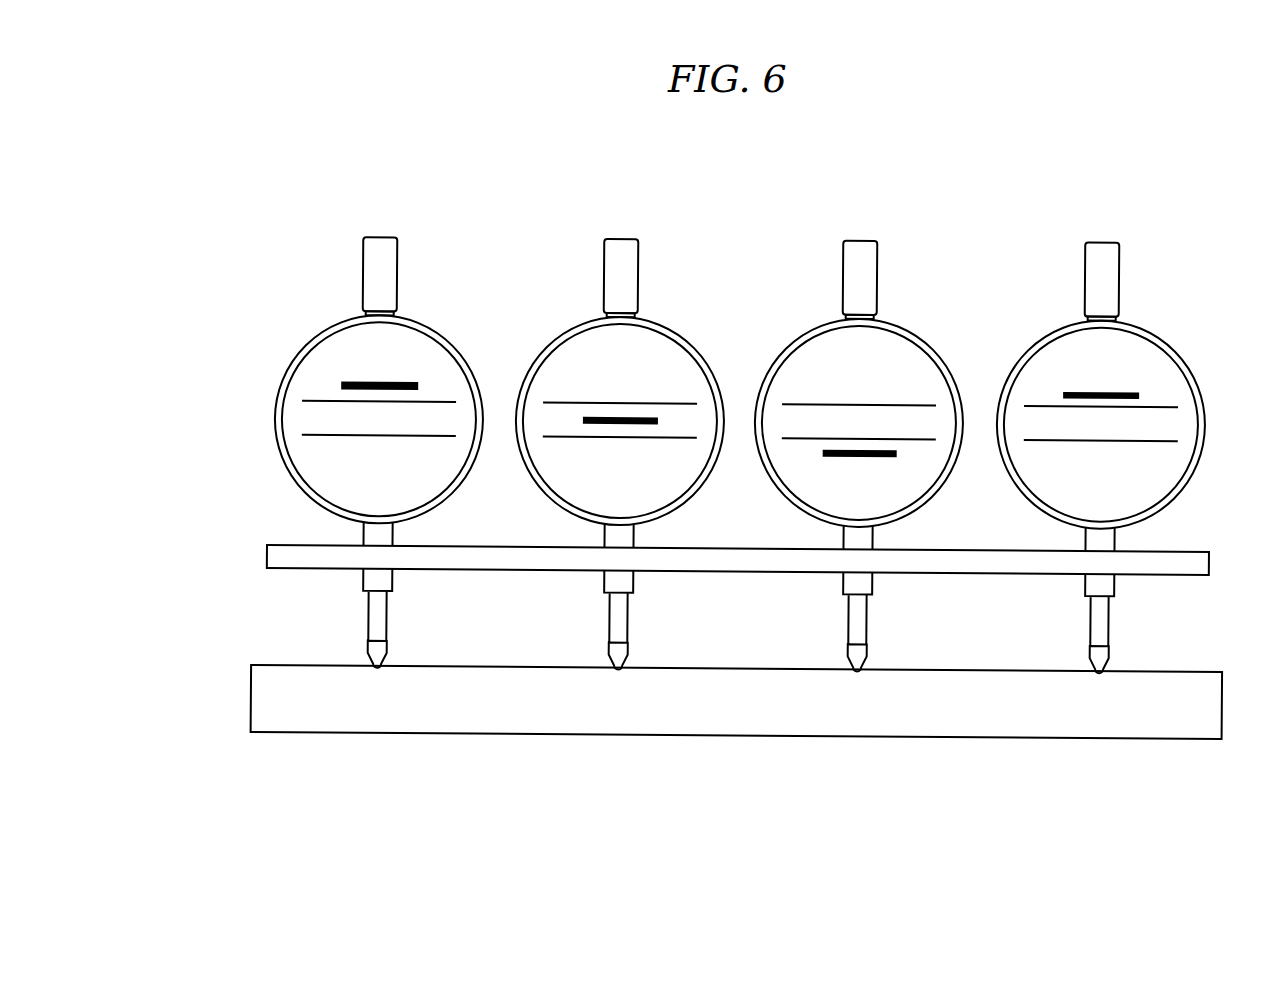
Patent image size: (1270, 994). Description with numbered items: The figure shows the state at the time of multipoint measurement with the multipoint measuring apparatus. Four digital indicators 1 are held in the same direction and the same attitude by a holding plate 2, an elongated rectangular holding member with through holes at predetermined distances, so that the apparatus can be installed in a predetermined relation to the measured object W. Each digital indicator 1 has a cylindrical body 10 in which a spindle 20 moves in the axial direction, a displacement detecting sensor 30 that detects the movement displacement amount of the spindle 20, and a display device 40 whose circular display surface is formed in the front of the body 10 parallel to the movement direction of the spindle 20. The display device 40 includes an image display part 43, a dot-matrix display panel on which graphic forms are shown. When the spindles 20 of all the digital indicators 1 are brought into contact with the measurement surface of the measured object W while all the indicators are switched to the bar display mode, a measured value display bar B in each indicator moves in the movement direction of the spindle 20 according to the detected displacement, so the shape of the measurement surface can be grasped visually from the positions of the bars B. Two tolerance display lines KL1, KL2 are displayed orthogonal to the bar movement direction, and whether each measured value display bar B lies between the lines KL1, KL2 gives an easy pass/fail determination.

The digital indicator 1 is at (736, 455).
The body 10 is at (298, 358).
The holding plate 2 is at (265, 552).
The spindle 20 is at (1108, 610).
The displacement detecting sensor 30 is at (425, 475).
The display device 40 is at (328, 475).
The image display part 43 is at (752, 518).
The measured value display bar B is at (374, 381).
The tolerance display line KL1 is at (300, 434).
The tolerance display line KL2 is at (300, 401).
The measured object W is at (338, 717).